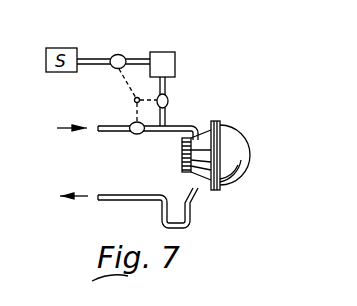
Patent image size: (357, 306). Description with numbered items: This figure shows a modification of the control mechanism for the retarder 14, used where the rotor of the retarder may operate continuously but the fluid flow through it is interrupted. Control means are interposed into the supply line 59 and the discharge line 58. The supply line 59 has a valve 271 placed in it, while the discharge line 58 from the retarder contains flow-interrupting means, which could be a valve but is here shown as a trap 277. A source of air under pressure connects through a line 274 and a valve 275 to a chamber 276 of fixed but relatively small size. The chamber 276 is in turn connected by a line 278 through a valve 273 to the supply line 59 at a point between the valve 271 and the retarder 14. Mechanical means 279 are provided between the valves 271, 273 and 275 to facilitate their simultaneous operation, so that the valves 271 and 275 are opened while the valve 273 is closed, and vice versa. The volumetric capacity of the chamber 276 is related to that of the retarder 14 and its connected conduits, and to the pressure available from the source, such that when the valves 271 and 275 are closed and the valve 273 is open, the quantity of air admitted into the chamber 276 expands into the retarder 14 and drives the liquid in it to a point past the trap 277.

The retarder 14 is at (232, 124).
The discharge line 58 is at (110, 195).
The supply line 59 is at (100, 132).
The valve 271 is at (136, 135).
The valve 273 is at (169, 101).
The line 274 is at (91, 47).
The valve 275 is at (118, 54).
The chamber 276 is at (177, 57).
The trap 277 is at (192, 217).
The line 278 is at (166, 86).
The mechanical means 279 is at (134, 100).